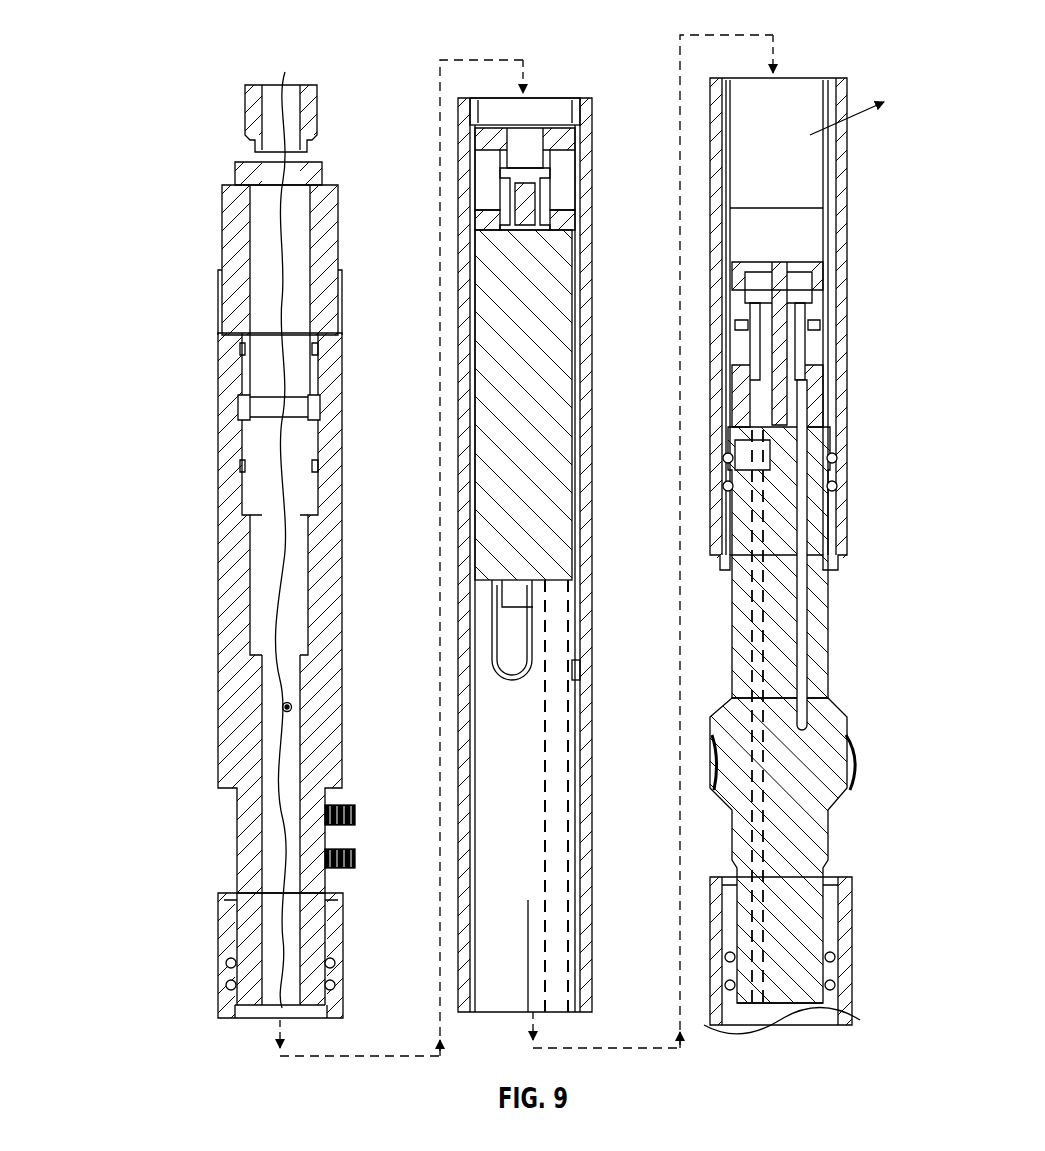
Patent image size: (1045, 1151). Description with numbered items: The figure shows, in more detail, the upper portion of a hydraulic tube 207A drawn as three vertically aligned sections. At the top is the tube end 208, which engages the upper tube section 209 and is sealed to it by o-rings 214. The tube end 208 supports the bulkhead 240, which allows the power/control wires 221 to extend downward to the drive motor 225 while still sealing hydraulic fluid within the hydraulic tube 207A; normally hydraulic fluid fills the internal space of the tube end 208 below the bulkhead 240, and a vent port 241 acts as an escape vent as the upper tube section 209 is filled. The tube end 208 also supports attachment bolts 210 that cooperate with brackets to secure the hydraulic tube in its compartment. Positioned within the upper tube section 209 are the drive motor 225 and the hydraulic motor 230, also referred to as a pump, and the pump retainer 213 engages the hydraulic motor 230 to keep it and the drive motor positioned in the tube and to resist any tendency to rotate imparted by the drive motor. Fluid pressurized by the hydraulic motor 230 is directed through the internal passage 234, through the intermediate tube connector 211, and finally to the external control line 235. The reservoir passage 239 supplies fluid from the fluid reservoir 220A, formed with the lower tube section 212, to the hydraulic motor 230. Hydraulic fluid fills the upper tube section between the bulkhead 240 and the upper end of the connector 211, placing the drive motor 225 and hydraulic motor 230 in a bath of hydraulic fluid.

The hydraulic tube 207A is at (153, 659).
The tube end 208 is at (148, 520).
The upper tube section 209 is at (467, 462).
The attachment bolts 210 is at (345, 805).
The intermediate tube connector 211 is at (828, 660).
The lower tube section 212 is at (853, 1000).
The pump retainer 213 is at (500, 710).
The o-rings 214 is at (228, 963).
The fluid reservoir 220A is at (771, 1020).
The power/control wires 221 is at (272, 240).
The drive motor 225 is at (537, 98).
The hydraulic motor 230 is at (540, 375).
The internal passage 234 is at (551, 723).
The external control line 235 is at (860, 745).
The reservoir passage 239 is at (748, 503).
The bulkhead 240 is at (262, 433).
The vent port 241 is at (292, 704).